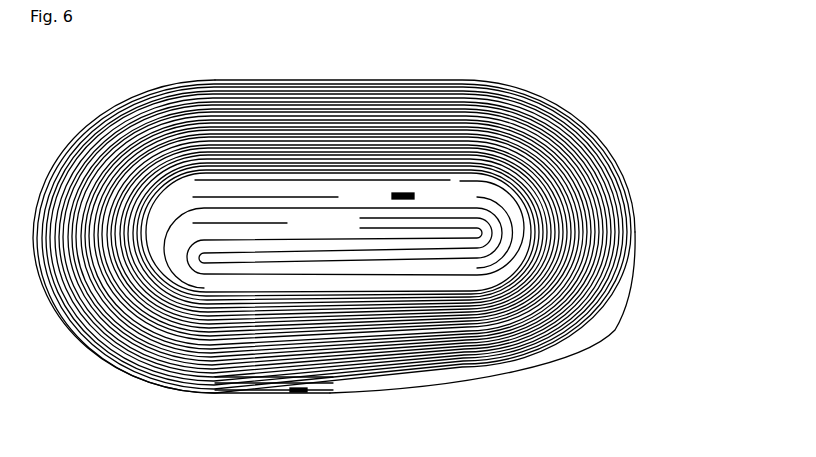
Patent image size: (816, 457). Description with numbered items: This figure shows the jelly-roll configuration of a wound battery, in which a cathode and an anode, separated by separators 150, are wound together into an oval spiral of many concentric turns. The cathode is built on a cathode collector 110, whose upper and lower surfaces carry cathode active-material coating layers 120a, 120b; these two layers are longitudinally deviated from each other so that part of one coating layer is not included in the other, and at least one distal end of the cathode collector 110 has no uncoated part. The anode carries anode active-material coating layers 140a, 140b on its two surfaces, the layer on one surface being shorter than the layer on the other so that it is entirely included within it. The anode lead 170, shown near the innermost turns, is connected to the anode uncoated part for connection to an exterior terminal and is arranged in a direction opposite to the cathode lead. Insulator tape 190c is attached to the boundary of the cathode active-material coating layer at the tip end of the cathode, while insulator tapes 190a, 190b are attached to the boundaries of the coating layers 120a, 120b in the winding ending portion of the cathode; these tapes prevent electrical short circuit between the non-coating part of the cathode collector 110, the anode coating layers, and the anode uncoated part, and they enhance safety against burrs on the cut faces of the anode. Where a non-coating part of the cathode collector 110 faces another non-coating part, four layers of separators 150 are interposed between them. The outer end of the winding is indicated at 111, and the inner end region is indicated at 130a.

The cathode collector 110 is at (277, 80).
The outer end of coil conductor 111 is at (443, 379).
The cathode active-material coating layer 120a is at (393, 80).
The cathode active-material coating layer 120b is at (337, 80).
The inner end of coil conductor 130a is at (450, 181).
The anode active-material coating layer 140a is at (636, 195).
The anode active-material coating layer 140b is at (636, 223).
The separator 150 is at (220, 392).
The anode lead 170 is at (414, 196).
The insulator tape 190a is at (115, 102).
The insulator tape 190b is at (163, 82).
The insulator tape 190c is at (462, 81).